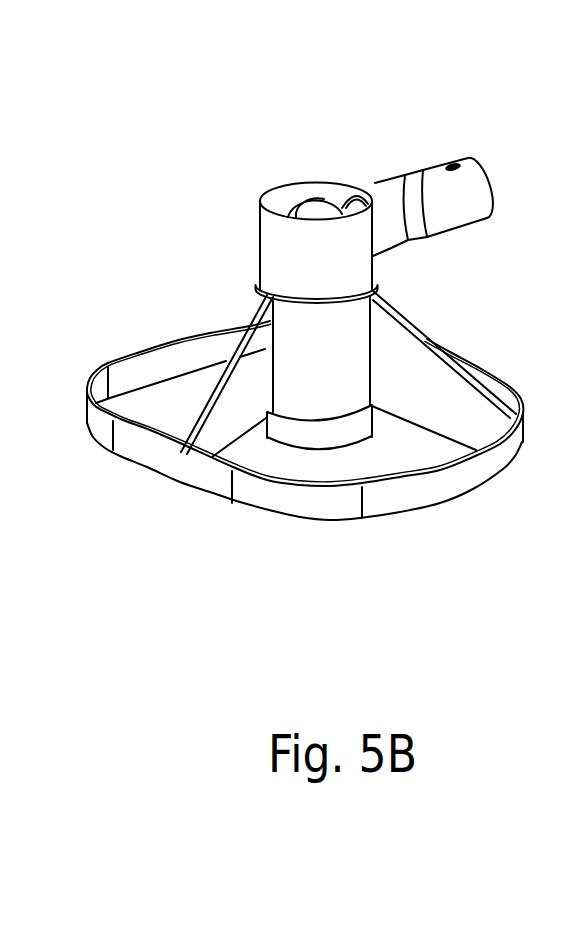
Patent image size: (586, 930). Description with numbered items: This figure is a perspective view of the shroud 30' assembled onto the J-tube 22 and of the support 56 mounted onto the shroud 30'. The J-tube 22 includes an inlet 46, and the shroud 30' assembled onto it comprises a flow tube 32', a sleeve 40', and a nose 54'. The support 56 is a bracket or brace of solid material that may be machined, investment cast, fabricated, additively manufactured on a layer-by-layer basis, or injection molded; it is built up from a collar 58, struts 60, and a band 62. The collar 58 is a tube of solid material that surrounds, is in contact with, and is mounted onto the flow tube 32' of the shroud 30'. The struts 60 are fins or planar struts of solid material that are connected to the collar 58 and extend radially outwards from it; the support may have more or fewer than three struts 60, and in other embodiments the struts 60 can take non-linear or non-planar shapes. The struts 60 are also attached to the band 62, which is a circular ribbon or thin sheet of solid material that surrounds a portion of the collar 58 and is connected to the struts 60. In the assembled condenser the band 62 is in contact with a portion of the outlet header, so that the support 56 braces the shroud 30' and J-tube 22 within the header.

The J-tube 22 is at (432, 165).
The shroud 30' is at (293, 165).
The flow tube 32' is at (268, 246).
The sleeve 40' is at (400, 163).
The nose 54' is at (328, 163).
The support 56 is at (173, 335).
The collar 58 is at (333, 343).
The struts 60 is at (442, 407).
The band 62 is at (118, 360).
The inlet 46 is at (327, 452).